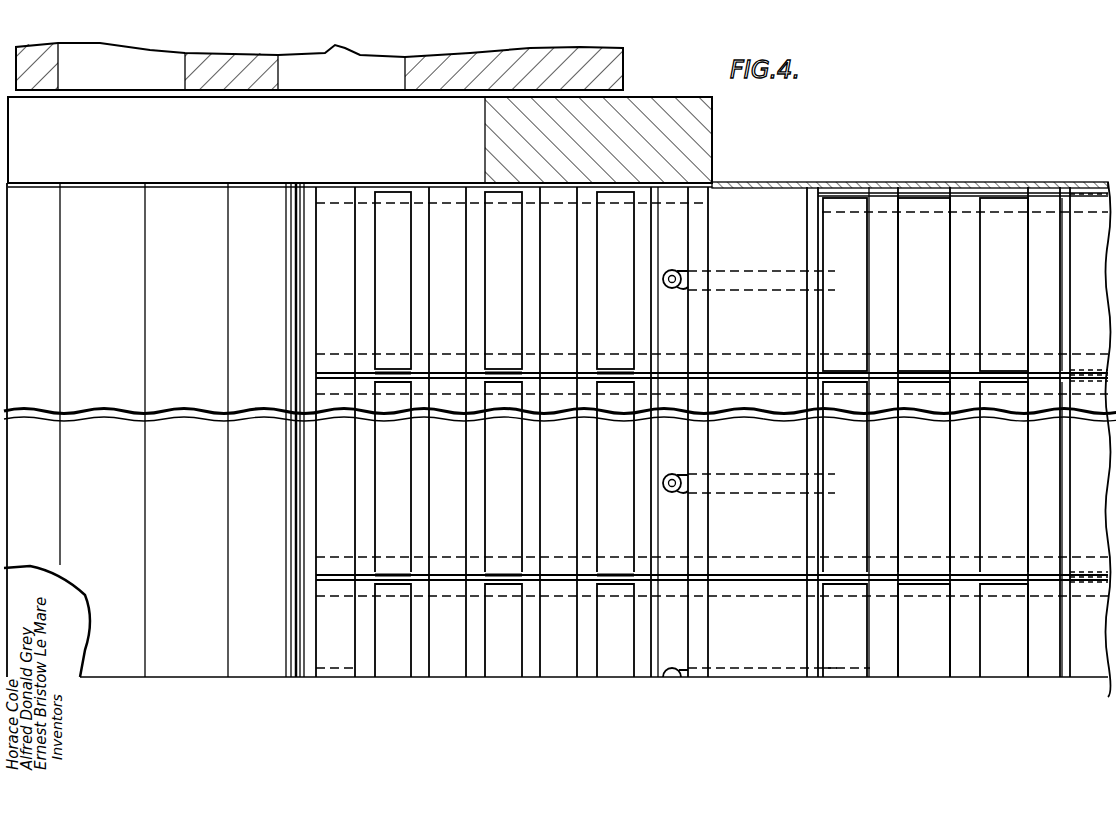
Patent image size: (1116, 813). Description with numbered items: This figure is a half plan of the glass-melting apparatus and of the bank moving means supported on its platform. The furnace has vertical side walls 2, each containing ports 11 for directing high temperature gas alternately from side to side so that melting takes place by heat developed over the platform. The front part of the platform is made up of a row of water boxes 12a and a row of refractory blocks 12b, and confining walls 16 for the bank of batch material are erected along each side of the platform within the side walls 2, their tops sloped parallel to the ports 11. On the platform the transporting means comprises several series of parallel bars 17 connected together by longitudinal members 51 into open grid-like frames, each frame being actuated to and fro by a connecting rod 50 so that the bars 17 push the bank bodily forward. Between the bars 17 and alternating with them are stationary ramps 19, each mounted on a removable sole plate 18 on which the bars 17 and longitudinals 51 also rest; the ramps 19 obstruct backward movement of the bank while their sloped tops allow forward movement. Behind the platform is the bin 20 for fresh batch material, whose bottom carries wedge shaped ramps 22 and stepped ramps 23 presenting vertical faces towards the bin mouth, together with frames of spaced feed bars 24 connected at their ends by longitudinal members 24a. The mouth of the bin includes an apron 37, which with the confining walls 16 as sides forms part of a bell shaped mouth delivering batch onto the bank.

The side walls 2 is at (638, 64).
The ports 11 is at (319, 66).
The water boxes 12a is at (202, 430).
The refractory blocks 12b is at (76, 430).
The confining walls 16 is at (730, 139).
The parallel bars 17 is at (502, 432).
The sole plate 18 is at (478, 330).
The stationary ramps 19 is at (504, 434).
The bin 20 is at (890, 182).
The ramp 22 is at (924, 437).
The ramp 23 is at (1068, 332).
The feed bars 24 is at (967, 439).
The longitudinal members 24a is at (968, 200).
The apron 37 is at (757, 432).
The connecting rod 50 is at (753, 278).
The longitudinal members 51 is at (368, 198).